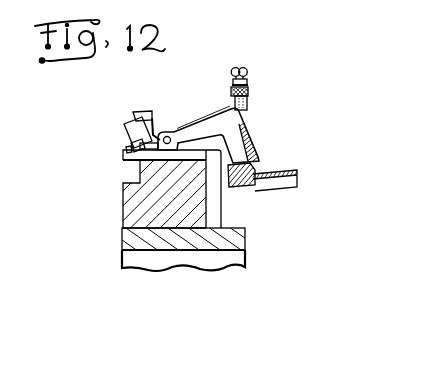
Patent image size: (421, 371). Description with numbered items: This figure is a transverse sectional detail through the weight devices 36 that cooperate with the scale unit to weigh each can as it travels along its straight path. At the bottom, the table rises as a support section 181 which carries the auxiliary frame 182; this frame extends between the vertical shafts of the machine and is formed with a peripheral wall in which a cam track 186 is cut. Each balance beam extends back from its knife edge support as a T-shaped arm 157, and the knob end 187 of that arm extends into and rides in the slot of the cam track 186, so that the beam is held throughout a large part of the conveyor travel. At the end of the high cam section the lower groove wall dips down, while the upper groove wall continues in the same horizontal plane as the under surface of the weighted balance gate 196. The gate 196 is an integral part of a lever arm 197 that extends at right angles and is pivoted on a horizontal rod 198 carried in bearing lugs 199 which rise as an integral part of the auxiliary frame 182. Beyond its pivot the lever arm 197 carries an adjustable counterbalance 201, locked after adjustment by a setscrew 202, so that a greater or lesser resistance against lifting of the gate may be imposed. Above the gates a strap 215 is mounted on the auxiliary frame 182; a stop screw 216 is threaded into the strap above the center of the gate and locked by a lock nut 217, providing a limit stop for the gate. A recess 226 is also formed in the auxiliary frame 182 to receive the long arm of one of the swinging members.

The weight devices 36 is at (269, 126).
The T-shaped arm 157 is at (292, 172).
The support section 181 is at (206, 251).
The auxiliary frame 182 is at (132, 220).
The cam track 186 is at (135, 183).
The knob end 187 is at (248, 186).
The weighted balance gate 196 is at (258, 148).
The lever arm 197 is at (200, 131).
The horizontal rod 198 is at (168, 136).
The bearing lugs 199 is at (137, 170).
The adjustable counterbalance 201 is at (133, 115).
The setscrew 202 is at (130, 142).
The strap 215 is at (250, 93).
The stop screw 216 is at (247, 71).
The lock nut 217 is at (249, 83).
The recess 226 is at (226, 216).